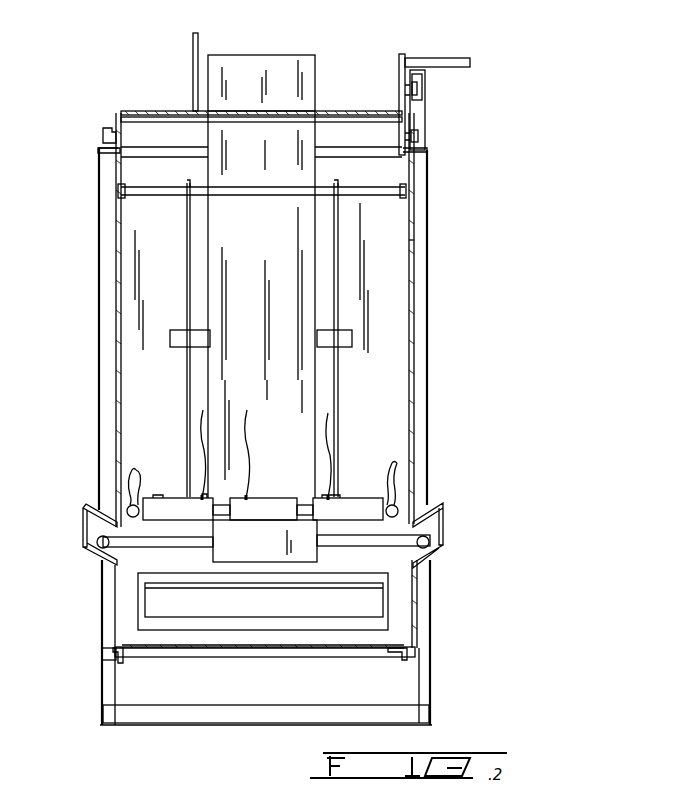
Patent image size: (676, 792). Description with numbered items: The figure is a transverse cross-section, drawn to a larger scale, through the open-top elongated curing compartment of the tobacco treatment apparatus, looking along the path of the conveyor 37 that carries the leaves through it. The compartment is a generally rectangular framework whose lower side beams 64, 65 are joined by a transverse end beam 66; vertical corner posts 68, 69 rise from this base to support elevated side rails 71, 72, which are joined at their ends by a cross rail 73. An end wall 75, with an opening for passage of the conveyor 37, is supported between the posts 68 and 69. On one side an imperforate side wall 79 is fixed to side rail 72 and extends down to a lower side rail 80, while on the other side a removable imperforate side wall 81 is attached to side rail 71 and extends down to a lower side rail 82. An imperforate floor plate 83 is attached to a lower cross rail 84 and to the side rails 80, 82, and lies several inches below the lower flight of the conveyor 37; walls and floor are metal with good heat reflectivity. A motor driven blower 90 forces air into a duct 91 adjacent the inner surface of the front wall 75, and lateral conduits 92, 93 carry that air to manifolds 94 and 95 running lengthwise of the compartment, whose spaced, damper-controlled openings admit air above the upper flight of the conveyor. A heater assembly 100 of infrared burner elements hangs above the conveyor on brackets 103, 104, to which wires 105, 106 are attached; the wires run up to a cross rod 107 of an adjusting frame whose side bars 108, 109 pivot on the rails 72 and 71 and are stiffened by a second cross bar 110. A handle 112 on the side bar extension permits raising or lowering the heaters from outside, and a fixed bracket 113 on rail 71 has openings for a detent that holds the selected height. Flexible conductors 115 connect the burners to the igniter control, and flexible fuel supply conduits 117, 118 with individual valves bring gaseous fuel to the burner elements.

The conveyor 37 is at (334, 613).
The lower side beam 64 is at (432, 672).
The lower side beam 65 is at (102, 670).
The transverse end beam 66 is at (220, 722).
The vertical corner post 68 is at (426, 312).
The vertical corner post 69 is at (98, 298).
The elevated side rail 71 is at (425, 152).
The elevated side rail 72 is at (97, 150).
The cross rail 73 is at (162, 150).
The end wall 75 is at (409, 246).
The imperforate side wall 79 is at (121, 412).
The lower side rail 80 is at (124, 660).
The imperforate side wall 81 is at (409, 426).
The lower side rail 82 is at (392, 652).
The imperforate floor plate 83 is at (294, 650).
The lower cross rail 84 is at (216, 657).
The motor driven blower 90 is at (246, 38).
The duct 91 is at (296, 178).
The lateral conduit 92 is at (160, 540).
The lateral conduit 93 is at (360, 542).
The manifold 94 is at (90, 526).
The manifold 95 is at (443, 520).
The heater assembly 100 is at (262, 498).
The bracket 103 is at (186, 487).
The bracket 104 is at (348, 497).
The wire 105 is at (186, 395).
The wire 106 is at (339, 390).
The cross rod 107 is at (262, 193).
The side bar 108 is at (116, 138).
The side bar 109 is at (397, 135).
The second cross bar 110 is at (358, 111).
The handle 112 is at (447, 61).
The fixed bracket 113 is at (425, 106).
The flexible conductors 115 is at (246, 498).
The fuel supply conduit 117 is at (127, 487).
The fuel supply conduit 118 is at (403, 480).